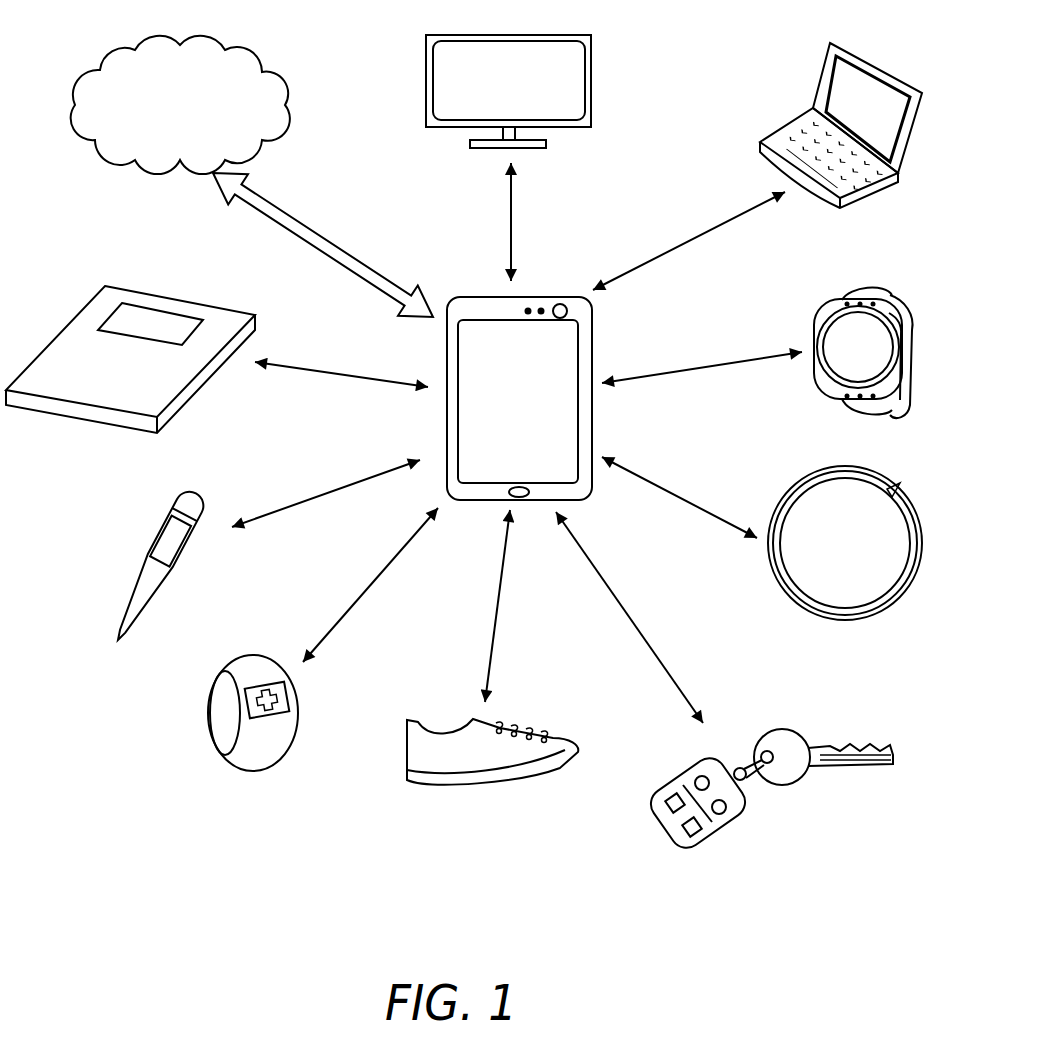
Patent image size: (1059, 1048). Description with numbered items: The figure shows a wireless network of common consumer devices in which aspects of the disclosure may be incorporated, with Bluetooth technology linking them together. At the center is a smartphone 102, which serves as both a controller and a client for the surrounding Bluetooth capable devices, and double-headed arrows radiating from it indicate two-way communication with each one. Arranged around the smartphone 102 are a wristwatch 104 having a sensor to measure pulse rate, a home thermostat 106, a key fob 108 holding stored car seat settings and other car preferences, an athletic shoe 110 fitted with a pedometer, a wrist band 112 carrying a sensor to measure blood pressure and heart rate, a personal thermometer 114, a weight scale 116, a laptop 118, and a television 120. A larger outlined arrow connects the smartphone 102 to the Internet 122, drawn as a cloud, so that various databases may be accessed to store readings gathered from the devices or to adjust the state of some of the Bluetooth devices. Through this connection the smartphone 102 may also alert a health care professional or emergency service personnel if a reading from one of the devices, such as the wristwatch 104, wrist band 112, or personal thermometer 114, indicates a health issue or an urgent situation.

The smartphone 102 is at (592, 332).
The wristwatch 104 is at (830, 394).
The home thermostat 106 is at (853, 618).
The key fob 108 is at (695, 850).
The athletic shoe 110 is at (453, 792).
The wrist band 112 is at (238, 777).
The personal thermometer 114 is at (118, 642).
The weight scale 116 is at (52, 417).
The laptop 118 is at (884, 180).
The television 120 is at (426, 57).
The Internet 122 is at (85, 140).